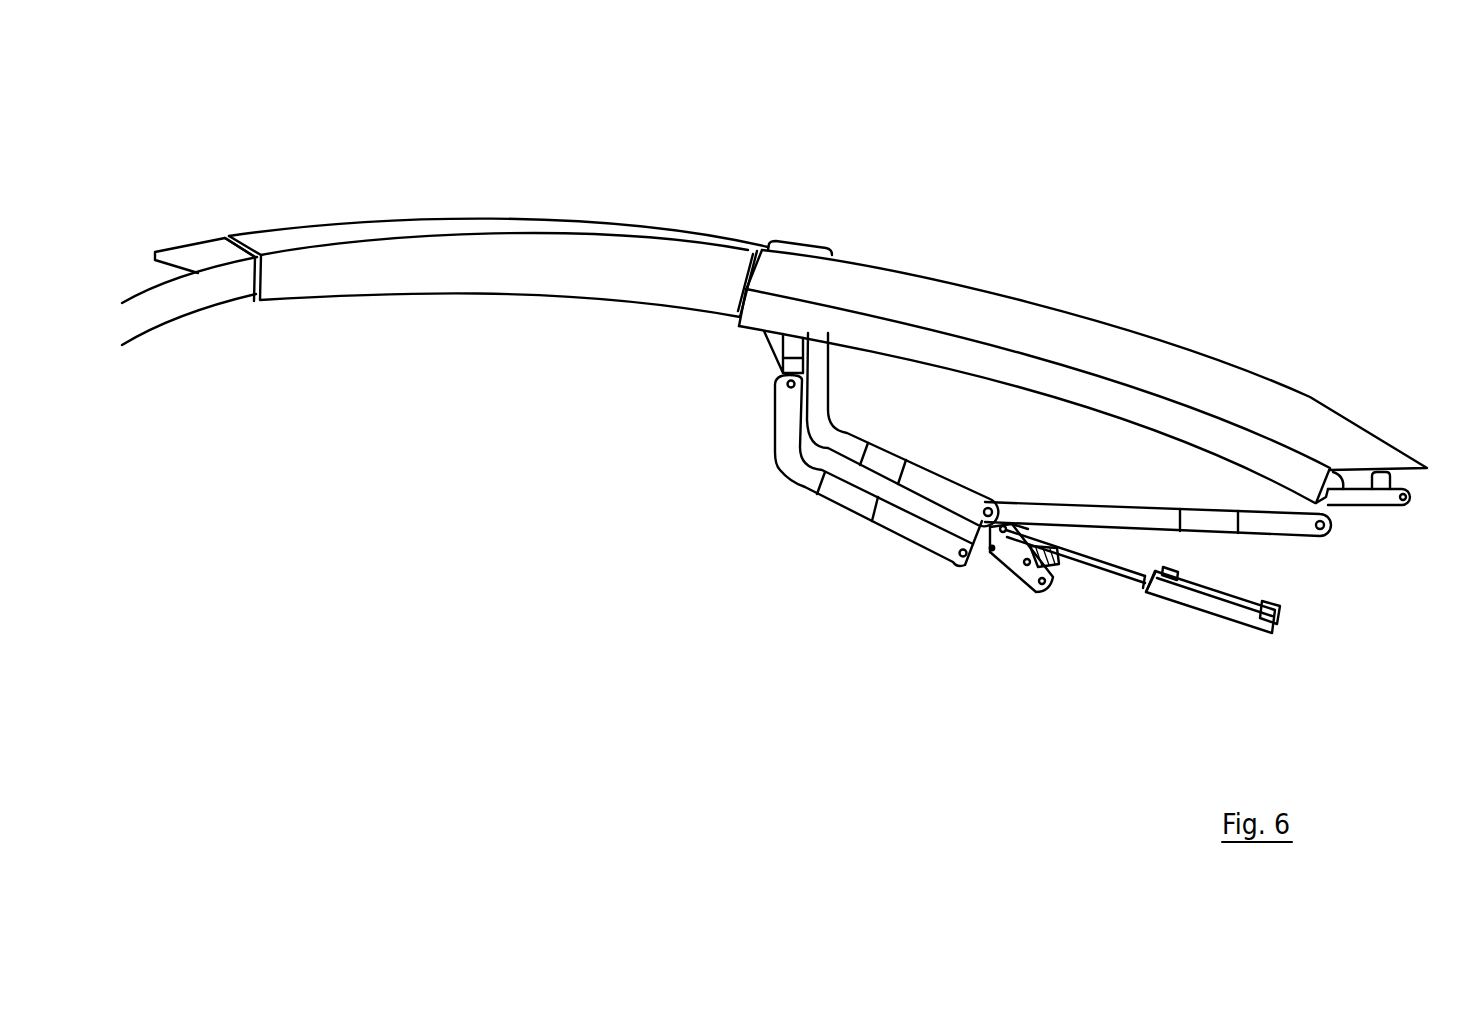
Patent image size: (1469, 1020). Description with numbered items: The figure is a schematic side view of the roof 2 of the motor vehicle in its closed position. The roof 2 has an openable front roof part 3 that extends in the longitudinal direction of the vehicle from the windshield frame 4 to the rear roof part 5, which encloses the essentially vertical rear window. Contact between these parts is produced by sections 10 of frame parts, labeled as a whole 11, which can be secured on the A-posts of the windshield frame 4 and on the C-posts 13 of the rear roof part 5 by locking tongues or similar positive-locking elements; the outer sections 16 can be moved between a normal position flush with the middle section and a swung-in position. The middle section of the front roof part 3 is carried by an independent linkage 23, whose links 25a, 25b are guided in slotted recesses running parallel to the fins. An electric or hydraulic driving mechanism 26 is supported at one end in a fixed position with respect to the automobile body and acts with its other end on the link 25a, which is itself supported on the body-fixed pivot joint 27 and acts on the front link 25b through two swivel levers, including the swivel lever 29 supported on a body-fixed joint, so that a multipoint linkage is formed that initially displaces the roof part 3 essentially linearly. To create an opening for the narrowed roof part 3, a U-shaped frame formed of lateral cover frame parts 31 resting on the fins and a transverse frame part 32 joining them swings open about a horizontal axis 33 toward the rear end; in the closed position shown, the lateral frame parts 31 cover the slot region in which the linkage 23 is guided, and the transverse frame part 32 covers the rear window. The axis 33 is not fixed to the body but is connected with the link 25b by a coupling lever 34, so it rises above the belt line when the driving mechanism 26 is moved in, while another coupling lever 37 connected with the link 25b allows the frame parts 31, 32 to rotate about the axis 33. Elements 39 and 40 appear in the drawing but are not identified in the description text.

The roof 2 is at (748, 140).
The front roof part 3 is at (423, 202).
The windshield frame 4 is at (187, 230).
The rear roof part 5 is at (1083, 329).
The section 10 is at (496, 238).
The outer section 16 is at (496, 238).
The frame parts 11 is at (1083, 329).
The C-post 13 is at (977, 354).
The linkage 23 is at (1049, 506).
The link 25a is at (892, 440).
The front link 25b is at (760, 441).
The driving mechanism 26 is at (1207, 600).
The pivot joint 27 is at (1042, 583).
The swivel lever 29 is at (993, 552).
The lateral cover frame part 31 is at (1201, 383).
The transverse frame part 32 is at (791, 239).
The horizontal axis 33 is at (1405, 495).
The coupling lever 34 is at (1221, 523).
The coupling lever 37 is at (793, 352).
The link arm 39 is at (1393, 505).
The hinge bracket 40 is at (1343, 490).